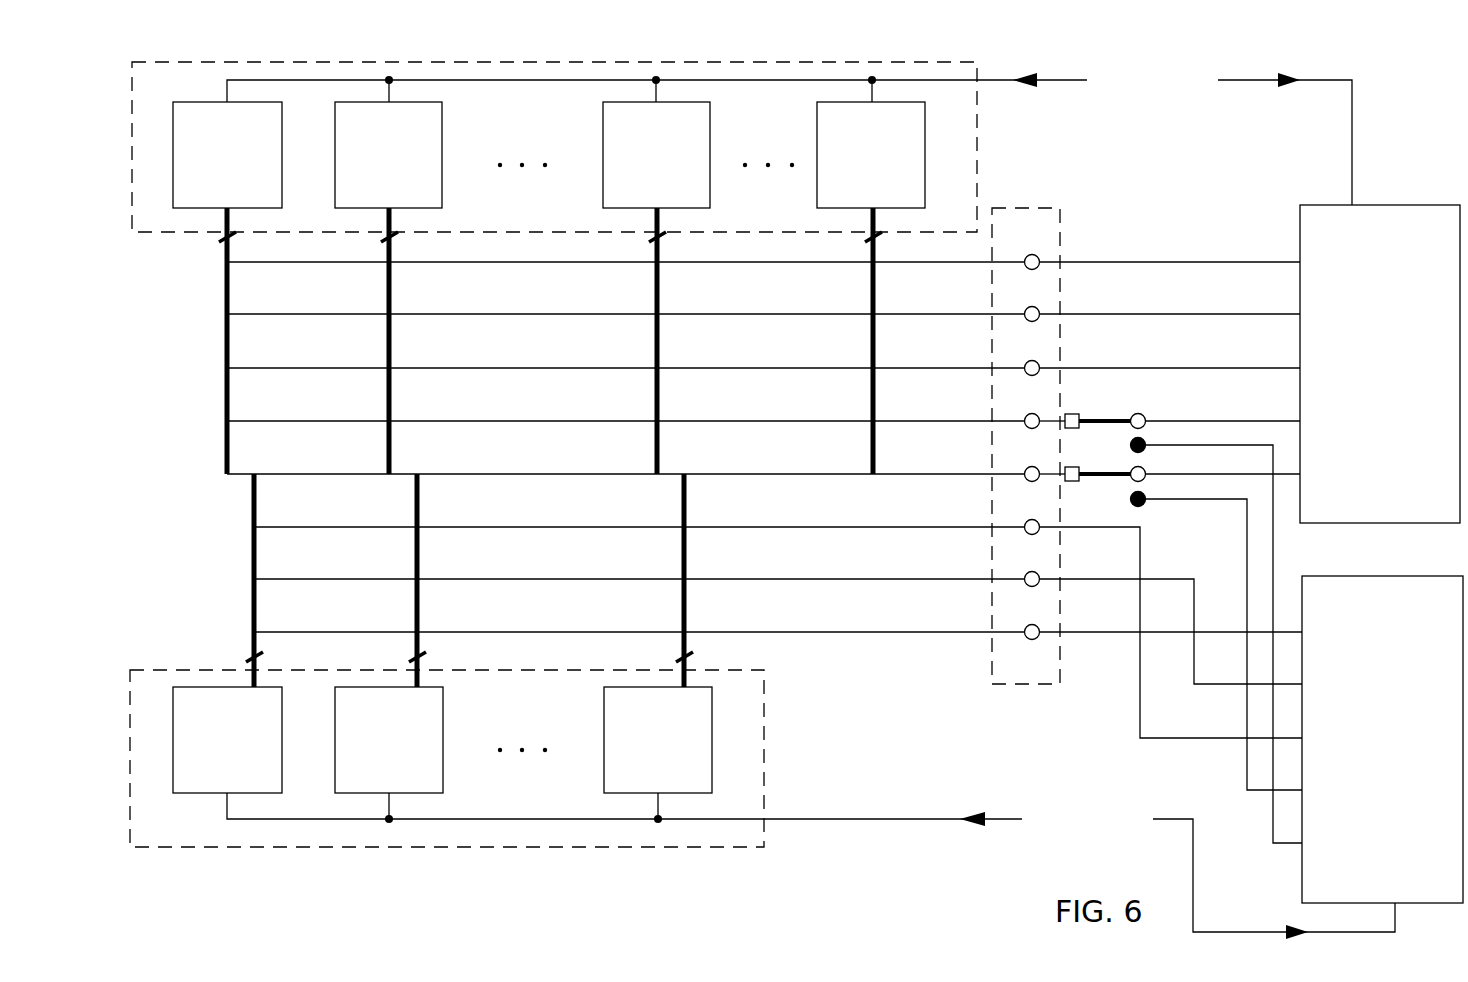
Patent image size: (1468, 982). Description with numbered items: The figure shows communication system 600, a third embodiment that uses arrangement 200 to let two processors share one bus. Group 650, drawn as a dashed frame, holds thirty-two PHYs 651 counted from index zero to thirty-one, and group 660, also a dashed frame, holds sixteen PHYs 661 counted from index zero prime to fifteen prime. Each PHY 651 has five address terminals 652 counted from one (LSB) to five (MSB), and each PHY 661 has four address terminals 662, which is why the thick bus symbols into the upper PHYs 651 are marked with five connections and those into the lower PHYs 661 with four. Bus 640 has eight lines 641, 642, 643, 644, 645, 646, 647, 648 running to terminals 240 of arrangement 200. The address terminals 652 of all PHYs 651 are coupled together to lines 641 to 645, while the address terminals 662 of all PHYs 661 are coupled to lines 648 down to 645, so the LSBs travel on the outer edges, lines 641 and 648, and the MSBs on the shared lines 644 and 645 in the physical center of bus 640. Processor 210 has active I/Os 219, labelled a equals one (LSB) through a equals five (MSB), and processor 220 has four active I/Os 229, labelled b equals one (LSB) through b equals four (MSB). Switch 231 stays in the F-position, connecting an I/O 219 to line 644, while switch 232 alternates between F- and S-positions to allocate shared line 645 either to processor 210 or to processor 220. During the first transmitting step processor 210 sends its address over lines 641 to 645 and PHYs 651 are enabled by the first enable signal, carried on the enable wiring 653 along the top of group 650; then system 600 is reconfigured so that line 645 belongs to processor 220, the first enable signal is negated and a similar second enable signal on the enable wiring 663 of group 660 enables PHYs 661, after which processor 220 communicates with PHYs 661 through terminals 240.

The communication system 600 is at (977, 897).
The group 650 is at (533, 138).
The PHY 651 is at (284, 160).
The address terminals 652 is at (226, 212).
The enable line connection 653 is at (226, 101).
The group 660 is at (533, 808).
The PHY 661 is at (284, 742).
The address terminals 662 is at (252, 688).
The enable line connection 663 is at (225, 798).
The bus 640 is at (930, 728).
The line 641 is at (946, 265).
The line 642 is at (946, 317).
The line 643 is at (946, 371).
The line 644 is at (946, 424).
The line 645 is at (946, 477).
The line 646 is at (946, 530).
The line 647 is at (946, 582).
The line 648 is at (946, 635).
The terminals 240 is at (1047, 238).
The arrangement 200 is at (1175, 208).
The processor 210 is at (1448, 236).
The I/Os 219 is at (1299, 262).
The processor 220 is at (1451, 608).
The I/Os 229 is at (1301, 632).
The switch 231 is at (1110, 413).
The switch 232 is at (1110, 466).